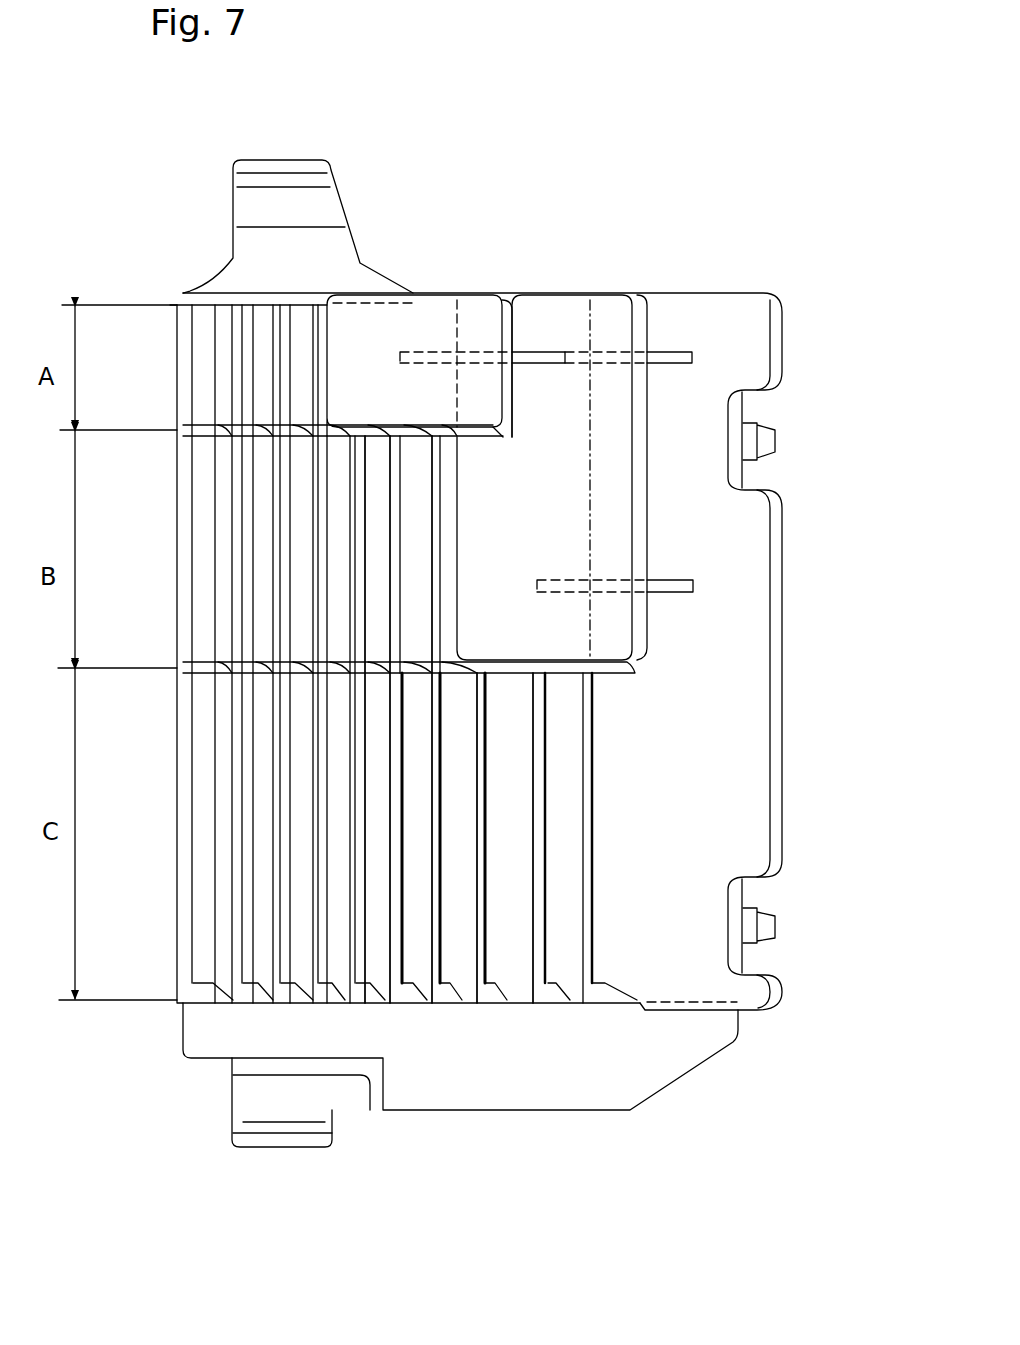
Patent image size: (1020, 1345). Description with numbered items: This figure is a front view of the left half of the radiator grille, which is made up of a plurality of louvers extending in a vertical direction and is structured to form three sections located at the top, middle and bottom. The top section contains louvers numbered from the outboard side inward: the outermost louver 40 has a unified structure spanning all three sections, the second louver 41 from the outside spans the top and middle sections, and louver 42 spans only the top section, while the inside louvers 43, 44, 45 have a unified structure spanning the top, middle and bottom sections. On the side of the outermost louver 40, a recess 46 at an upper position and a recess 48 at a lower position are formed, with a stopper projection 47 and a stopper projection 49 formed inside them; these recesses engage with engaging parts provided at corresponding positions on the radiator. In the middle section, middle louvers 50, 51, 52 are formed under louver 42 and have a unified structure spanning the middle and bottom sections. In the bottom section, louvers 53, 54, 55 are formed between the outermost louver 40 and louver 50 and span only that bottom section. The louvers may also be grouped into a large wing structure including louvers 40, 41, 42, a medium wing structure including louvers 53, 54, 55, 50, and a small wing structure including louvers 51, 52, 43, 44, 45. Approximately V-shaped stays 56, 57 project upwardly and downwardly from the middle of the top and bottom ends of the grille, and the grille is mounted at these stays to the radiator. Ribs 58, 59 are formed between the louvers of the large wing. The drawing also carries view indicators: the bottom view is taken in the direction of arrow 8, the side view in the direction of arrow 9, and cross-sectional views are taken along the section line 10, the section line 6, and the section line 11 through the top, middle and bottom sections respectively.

The outermost louver 40 is at (755, 303).
The second louver 41 is at (558, 300).
The louver 42 is at (443, 295).
The inside louver 43 is at (312, 312).
The inside louver 44 is at (270, 318).
The inside louver 45 is at (230, 312).
The recess 46 is at (760, 408).
The stopper projection 47 is at (775, 448).
The recess 48 is at (762, 897).
The stopper projection 49 is at (770, 930).
The middle louver 50 is at (414, 985).
The middle louver 51 is at (381, 988).
The middle louver 52 is at (338, 985).
The louver 53 is at (580, 722).
The louver 54 is at (528, 827).
The louver 55 is at (470, 935).
The stay 56 is at (260, 180).
The stay 57 is at (290, 1150).
The rib 58 is at (670, 365).
The rib 59 is at (542, 367).
The section line 6 is at (163, 555).
The arrow 8 is at (484, 1155).
The arrow 9 is at (802, 700).
The section line 10 is at (165, 360).
The section line 11 is at (165, 804).